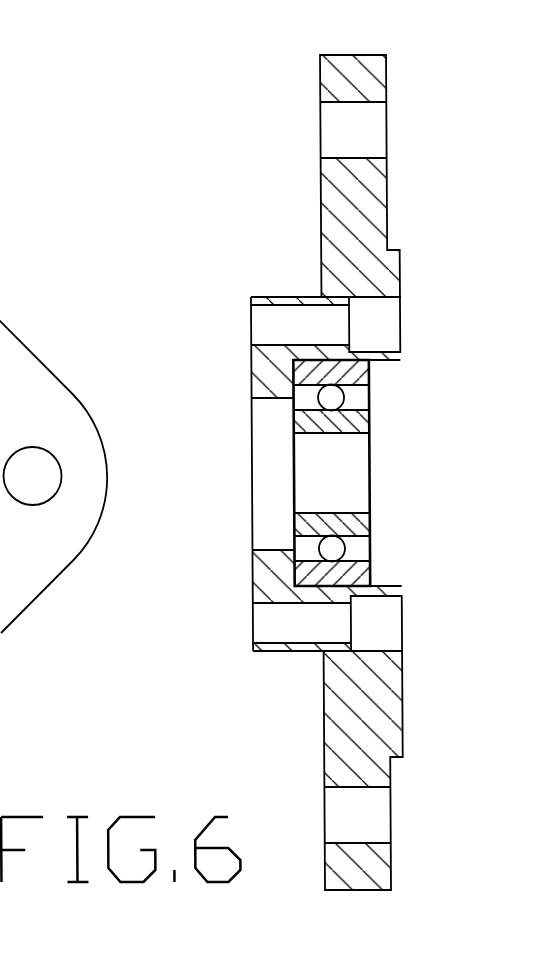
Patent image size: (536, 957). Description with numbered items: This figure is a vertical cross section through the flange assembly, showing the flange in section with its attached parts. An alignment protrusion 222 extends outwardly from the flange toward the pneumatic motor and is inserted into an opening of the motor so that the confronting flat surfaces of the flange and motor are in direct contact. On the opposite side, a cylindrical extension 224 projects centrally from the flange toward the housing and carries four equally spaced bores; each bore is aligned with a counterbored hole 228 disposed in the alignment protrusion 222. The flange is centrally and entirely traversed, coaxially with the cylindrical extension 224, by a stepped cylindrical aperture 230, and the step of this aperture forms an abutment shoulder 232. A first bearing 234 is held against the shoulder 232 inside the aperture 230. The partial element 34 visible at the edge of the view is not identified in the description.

The mounting plate 34 is at (54, 390).
The alignment protrusion 222 is at (394, 278).
The cylindrical extension 224 is at (279, 573).
The counterbored hole 228 is at (381, 320).
The stepped cylindrical aperture 230 is at (388, 465).
The abutment shoulder 232 is at (294, 384).
The first bearing 234 is at (332, 550).